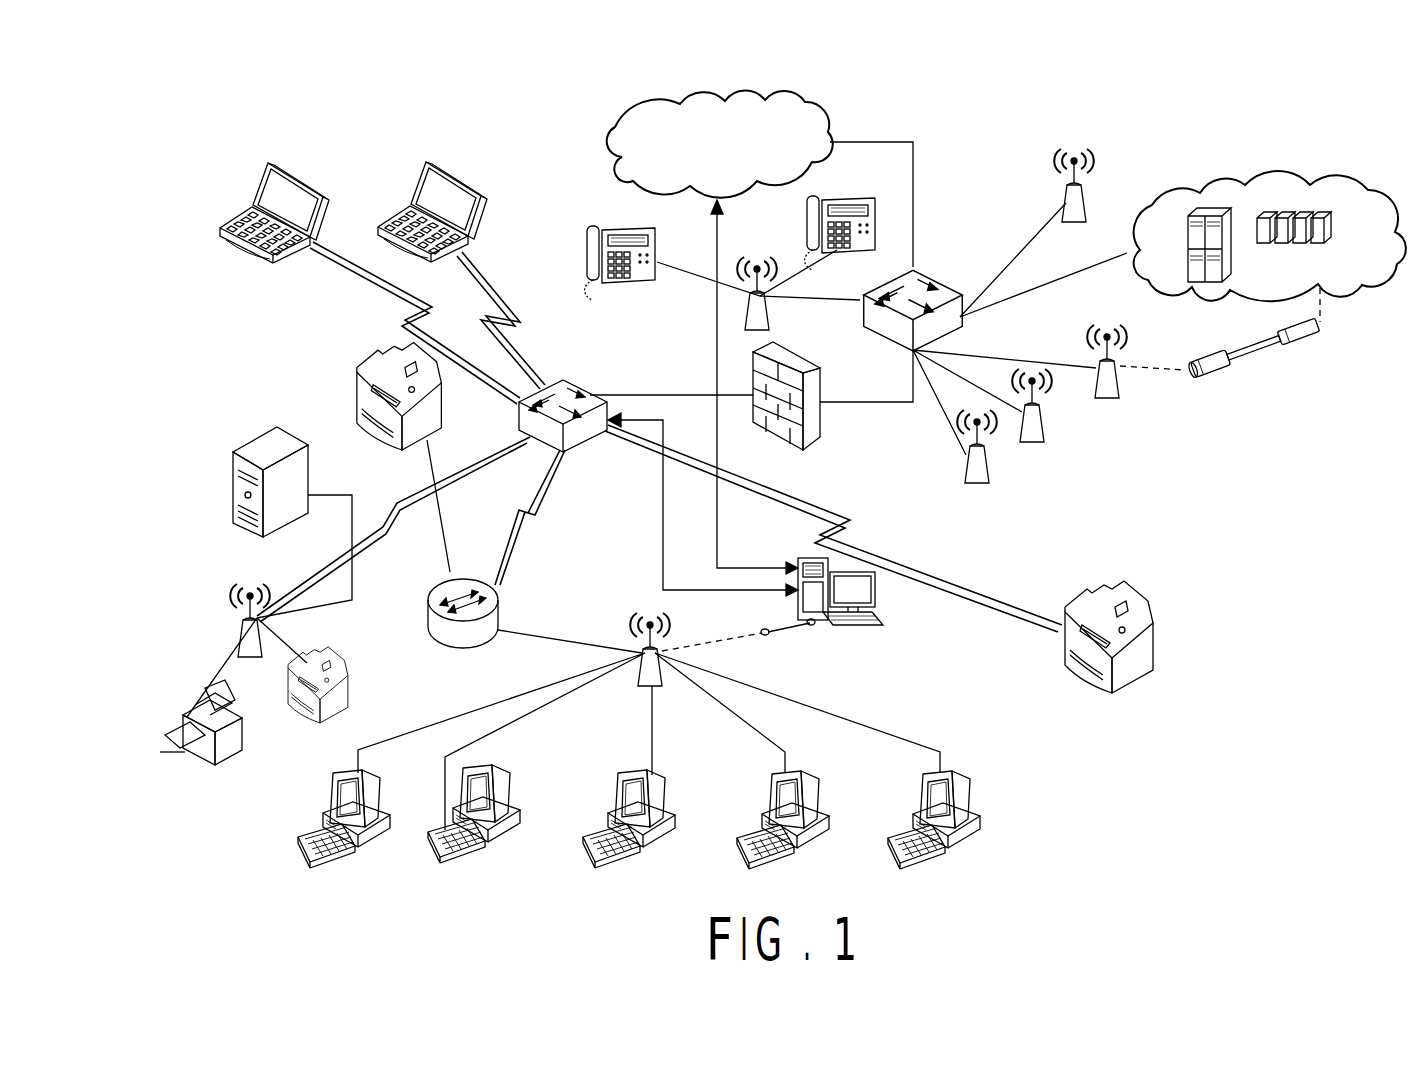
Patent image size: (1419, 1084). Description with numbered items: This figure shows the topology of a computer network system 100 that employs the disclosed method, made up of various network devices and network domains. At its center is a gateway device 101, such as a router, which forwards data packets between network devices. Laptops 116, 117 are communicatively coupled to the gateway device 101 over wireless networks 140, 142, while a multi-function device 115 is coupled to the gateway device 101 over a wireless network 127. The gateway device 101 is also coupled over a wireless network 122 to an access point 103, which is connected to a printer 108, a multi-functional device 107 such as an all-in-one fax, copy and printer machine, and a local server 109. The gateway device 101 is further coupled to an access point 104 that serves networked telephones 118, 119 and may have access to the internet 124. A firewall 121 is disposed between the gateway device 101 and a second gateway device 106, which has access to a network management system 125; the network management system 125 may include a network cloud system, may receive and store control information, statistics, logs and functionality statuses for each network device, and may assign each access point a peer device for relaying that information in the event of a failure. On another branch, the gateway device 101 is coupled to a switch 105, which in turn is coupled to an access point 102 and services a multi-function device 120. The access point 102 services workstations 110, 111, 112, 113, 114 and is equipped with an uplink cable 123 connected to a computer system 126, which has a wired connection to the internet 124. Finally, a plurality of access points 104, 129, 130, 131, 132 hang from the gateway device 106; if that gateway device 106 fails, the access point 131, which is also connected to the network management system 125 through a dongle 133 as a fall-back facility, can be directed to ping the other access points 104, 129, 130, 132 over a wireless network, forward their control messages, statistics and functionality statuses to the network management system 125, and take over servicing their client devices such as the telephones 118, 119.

The computer network system 100 is at (155, 98).
The gateway device 101 is at (585, 445).
The access point 102 is at (660, 646).
The access point 103 is at (240, 645).
The access point 104 is at (768, 305).
The switch 105 is at (455, 640).
The gateway device 106 is at (935, 268).
The multi-functional device 107 is at (345, 650).
The printer 108 is at (185, 720).
The local server 109 is at (245, 440).
The workstation 110 is at (328, 802).
The workstation 111 is at (510, 778).
The workstation 112 is at (665, 792).
The workstation 113 is at (815, 800).
The workstation 114 is at (975, 805).
The multi-function device 115 is at (1130, 592).
The laptop 116 is at (255, 203).
The laptop 117 is at (412, 204).
The networked telephone 118 is at (620, 285).
The networked telephone 119 is at (840, 210).
The multi-function device 120 is at (352, 392).
The firewall 121 is at (822, 410).
The wireless network 122 is at (465, 500).
The uplink cable 123 is at (780, 632).
The internet 124 is at (735, 160).
The network management system 125 is at (1284, 289).
The computer system 126 is at (885, 628).
The wireless network 127 is at (900, 560).
The access point 129 is at (985, 480).
The access point 130 is at (1040, 440).
The access point 131 is at (1115, 400).
The access point 132 is at (1080, 195).
The dongle 133 is at (1222, 360).
The wireless network 140 is at (358, 266).
The wireless network 142 is at (490, 282).